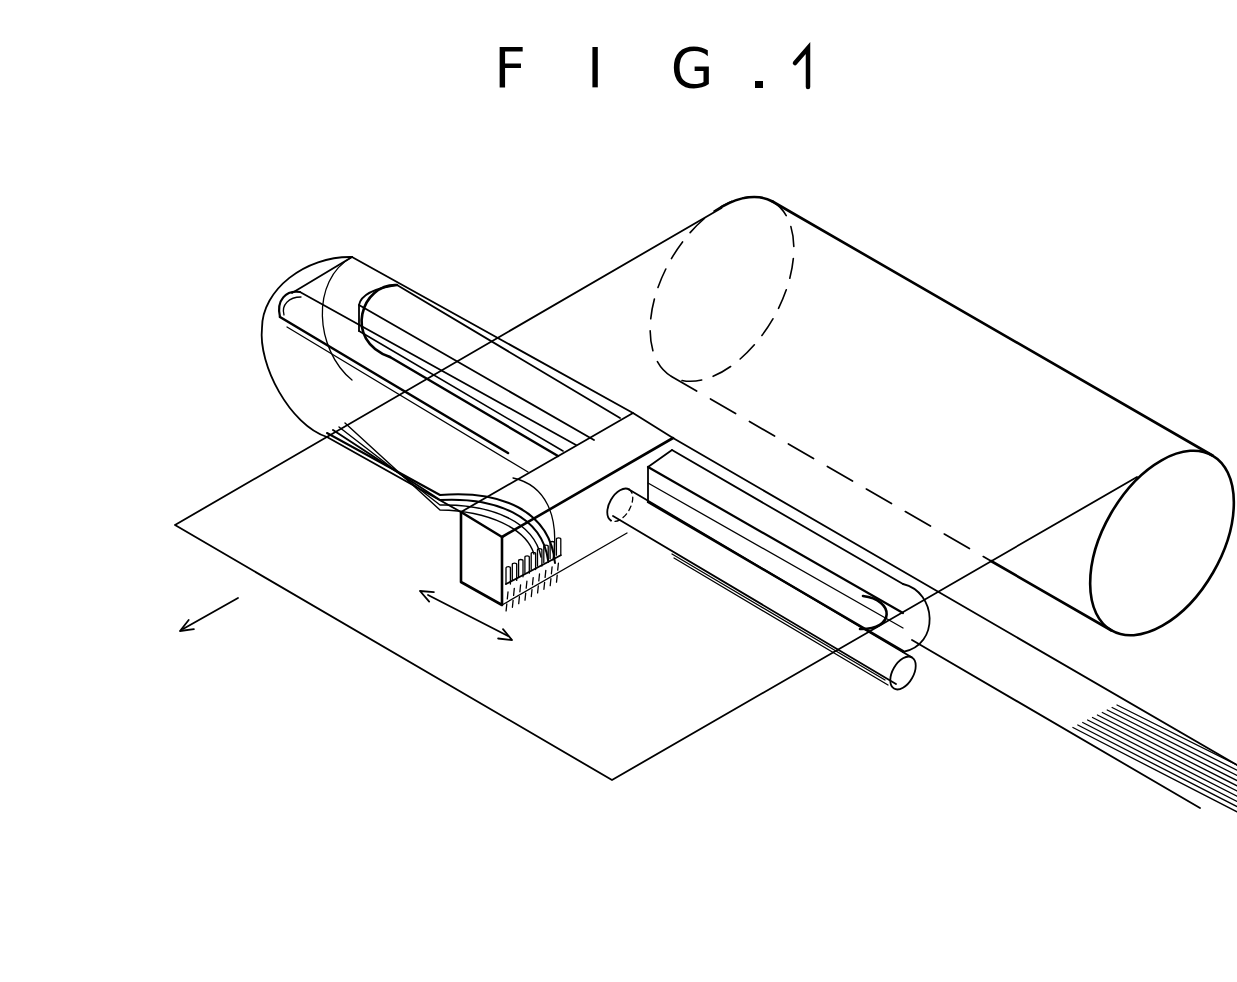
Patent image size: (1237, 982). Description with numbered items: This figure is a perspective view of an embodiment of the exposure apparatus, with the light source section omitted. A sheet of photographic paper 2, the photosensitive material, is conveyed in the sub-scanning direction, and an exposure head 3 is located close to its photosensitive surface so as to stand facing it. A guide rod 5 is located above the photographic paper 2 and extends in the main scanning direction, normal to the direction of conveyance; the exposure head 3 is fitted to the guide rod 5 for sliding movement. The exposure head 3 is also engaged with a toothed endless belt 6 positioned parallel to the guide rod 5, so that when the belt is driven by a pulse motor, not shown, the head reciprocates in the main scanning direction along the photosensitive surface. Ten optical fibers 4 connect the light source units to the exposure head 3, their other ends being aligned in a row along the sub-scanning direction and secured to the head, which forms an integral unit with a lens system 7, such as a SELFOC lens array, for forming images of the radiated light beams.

The photographic paper 2 is at (682, 745).
The exposure head 3 is at (461, 556).
The optical fiber 4 is at (1140, 762).
The guide rod 5 is at (848, 640).
The toothed endless belt 6 is at (812, 543).
The lens system 7 is at (551, 582).